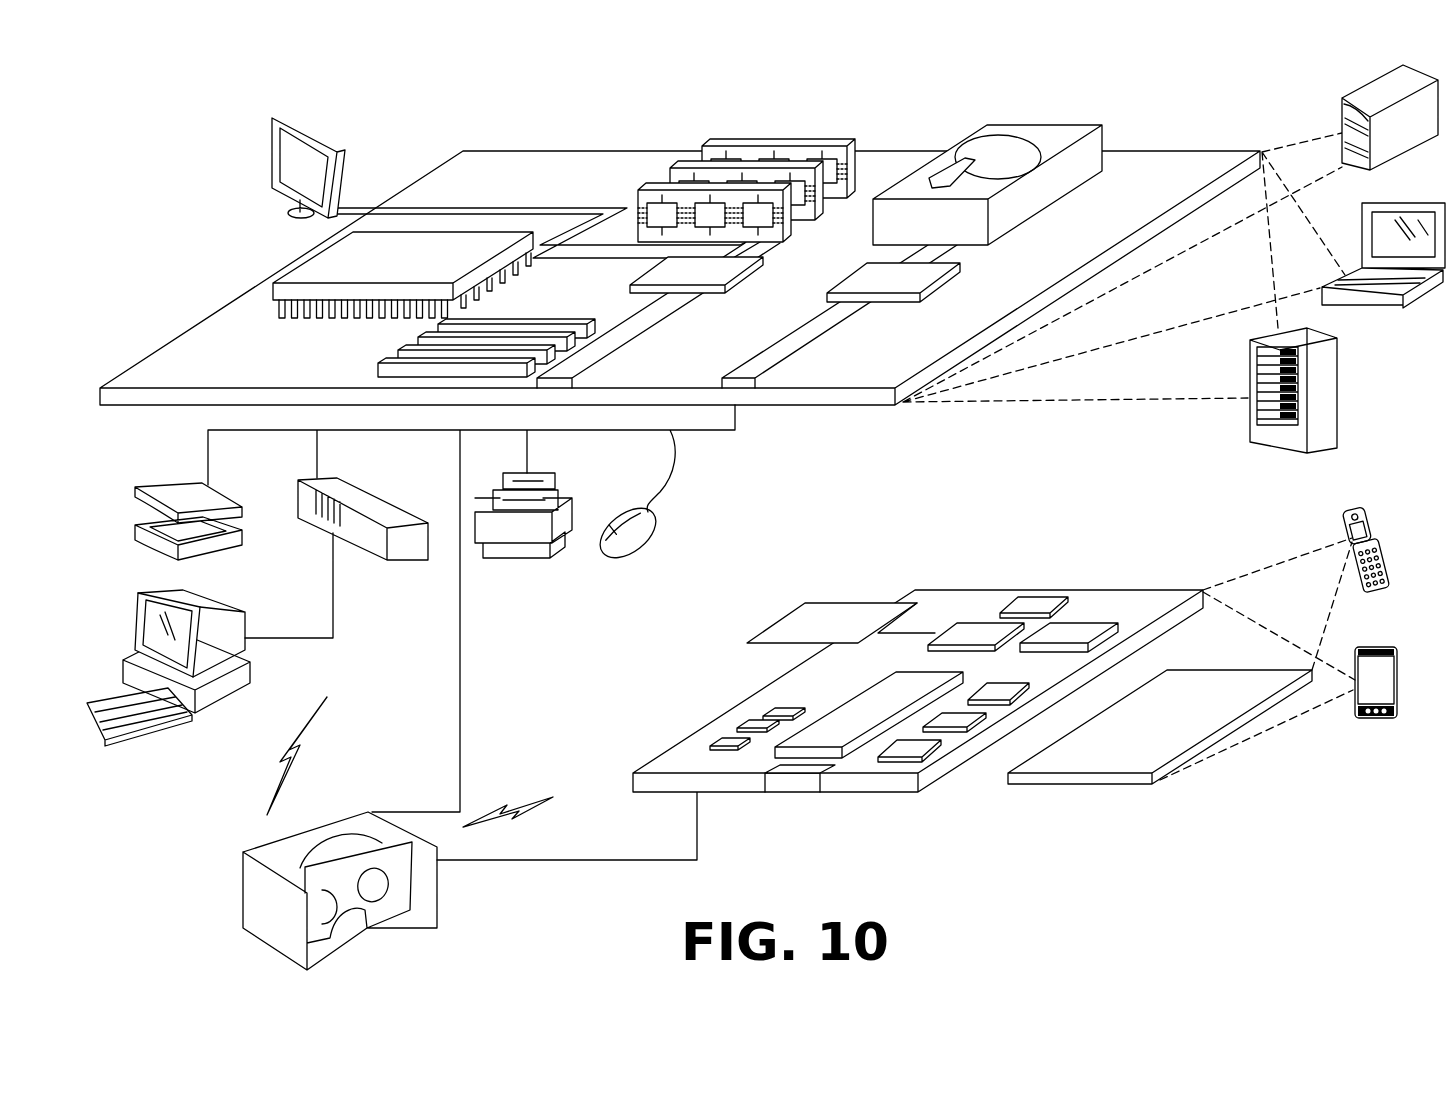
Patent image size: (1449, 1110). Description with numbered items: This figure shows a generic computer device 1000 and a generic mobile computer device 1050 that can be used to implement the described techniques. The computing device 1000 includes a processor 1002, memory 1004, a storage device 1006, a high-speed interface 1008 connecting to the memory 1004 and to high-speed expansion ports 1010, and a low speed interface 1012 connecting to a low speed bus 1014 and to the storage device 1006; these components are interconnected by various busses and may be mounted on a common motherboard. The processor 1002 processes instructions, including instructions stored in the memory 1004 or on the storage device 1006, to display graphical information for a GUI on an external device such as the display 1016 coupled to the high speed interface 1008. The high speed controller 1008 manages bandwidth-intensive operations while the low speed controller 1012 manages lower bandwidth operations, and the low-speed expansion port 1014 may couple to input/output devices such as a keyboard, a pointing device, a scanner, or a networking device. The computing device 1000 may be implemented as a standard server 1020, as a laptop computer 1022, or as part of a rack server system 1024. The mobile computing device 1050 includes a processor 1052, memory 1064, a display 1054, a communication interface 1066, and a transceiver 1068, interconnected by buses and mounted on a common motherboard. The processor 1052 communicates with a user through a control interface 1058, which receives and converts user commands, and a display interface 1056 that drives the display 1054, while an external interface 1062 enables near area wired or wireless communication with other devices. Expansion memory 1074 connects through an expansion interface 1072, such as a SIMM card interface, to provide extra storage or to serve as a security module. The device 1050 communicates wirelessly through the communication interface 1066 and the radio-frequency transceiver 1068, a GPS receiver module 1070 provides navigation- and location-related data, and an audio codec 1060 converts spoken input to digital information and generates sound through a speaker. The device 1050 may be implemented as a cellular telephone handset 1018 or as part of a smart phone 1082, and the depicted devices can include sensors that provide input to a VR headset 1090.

The computing device 1000 is at (418, 102).
The processor 1002 is at (304, 262).
The memory 1004 is at (786, 148).
The storage device 1006 is at (1032, 124).
The high-speed interface 1008 is at (712, 268).
The high-speed expansion ports 1010 is at (410, 350).
The low speed interface 1012 is at (870, 272).
The low speed bus 1014 is at (747, 375).
The display 1016 is at (272, 118).
The mobile phone 1018 is at (1361, 508).
The standard server 1020 is at (1362, 93).
The laptop computer 1022 is at (1422, 203).
The rack server system 1024 is at (1340, 389).
The mobile computing device 1050 is at (1240, 777).
The processor 1052 is at (833, 722).
The display 1054 is at (1200, 690).
The display interface 1056 is at (922, 746).
The control interface 1058 is at (960, 720).
The audio codec 1060 is at (1003, 688).
The external interface 1062 is at (793, 774).
The memory 1064 is at (742, 724).
The communication interface 1066 is at (978, 626).
The transceiver 1068 is at (1077, 634).
The GPS receiver module 1070 is at (1033, 600).
The expansion interface 1072 is at (897, 603).
The expansion memory 1074 is at (805, 605).
The smart phone 1082 is at (1368, 646).
The virtual reality headset 1090 is at (452, 868).